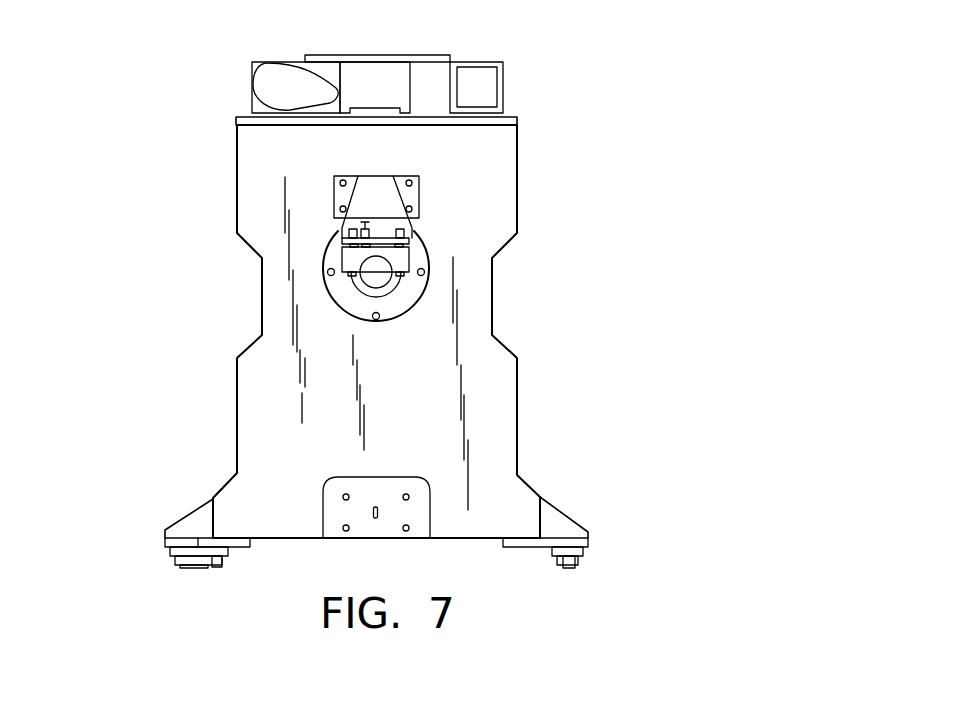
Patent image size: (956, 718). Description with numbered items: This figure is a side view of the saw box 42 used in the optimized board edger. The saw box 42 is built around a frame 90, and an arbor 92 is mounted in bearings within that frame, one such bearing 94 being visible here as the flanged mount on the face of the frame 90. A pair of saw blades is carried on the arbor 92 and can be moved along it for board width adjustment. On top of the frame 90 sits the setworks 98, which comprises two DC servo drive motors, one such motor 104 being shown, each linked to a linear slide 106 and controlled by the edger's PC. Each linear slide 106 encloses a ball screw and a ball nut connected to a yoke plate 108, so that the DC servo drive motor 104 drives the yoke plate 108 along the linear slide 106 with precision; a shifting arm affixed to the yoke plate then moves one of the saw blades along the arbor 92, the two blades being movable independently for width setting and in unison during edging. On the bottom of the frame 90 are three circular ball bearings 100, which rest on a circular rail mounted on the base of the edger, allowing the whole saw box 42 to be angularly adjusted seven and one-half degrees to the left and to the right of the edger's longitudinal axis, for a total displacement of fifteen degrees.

The saw box 42 is at (677, 117).
The frame 90 is at (517, 390).
The arbor 92 is at (357, 283).
The bearing 94 is at (427, 253).
The setworks 98 is at (503, 81).
The linear slide 106 is at (477, 87).
The circular ball bearing 100 is at (193, 568).
The DC servo drive motor 104 is at (252, 72).
The yoke plate 108 is at (320, 54).